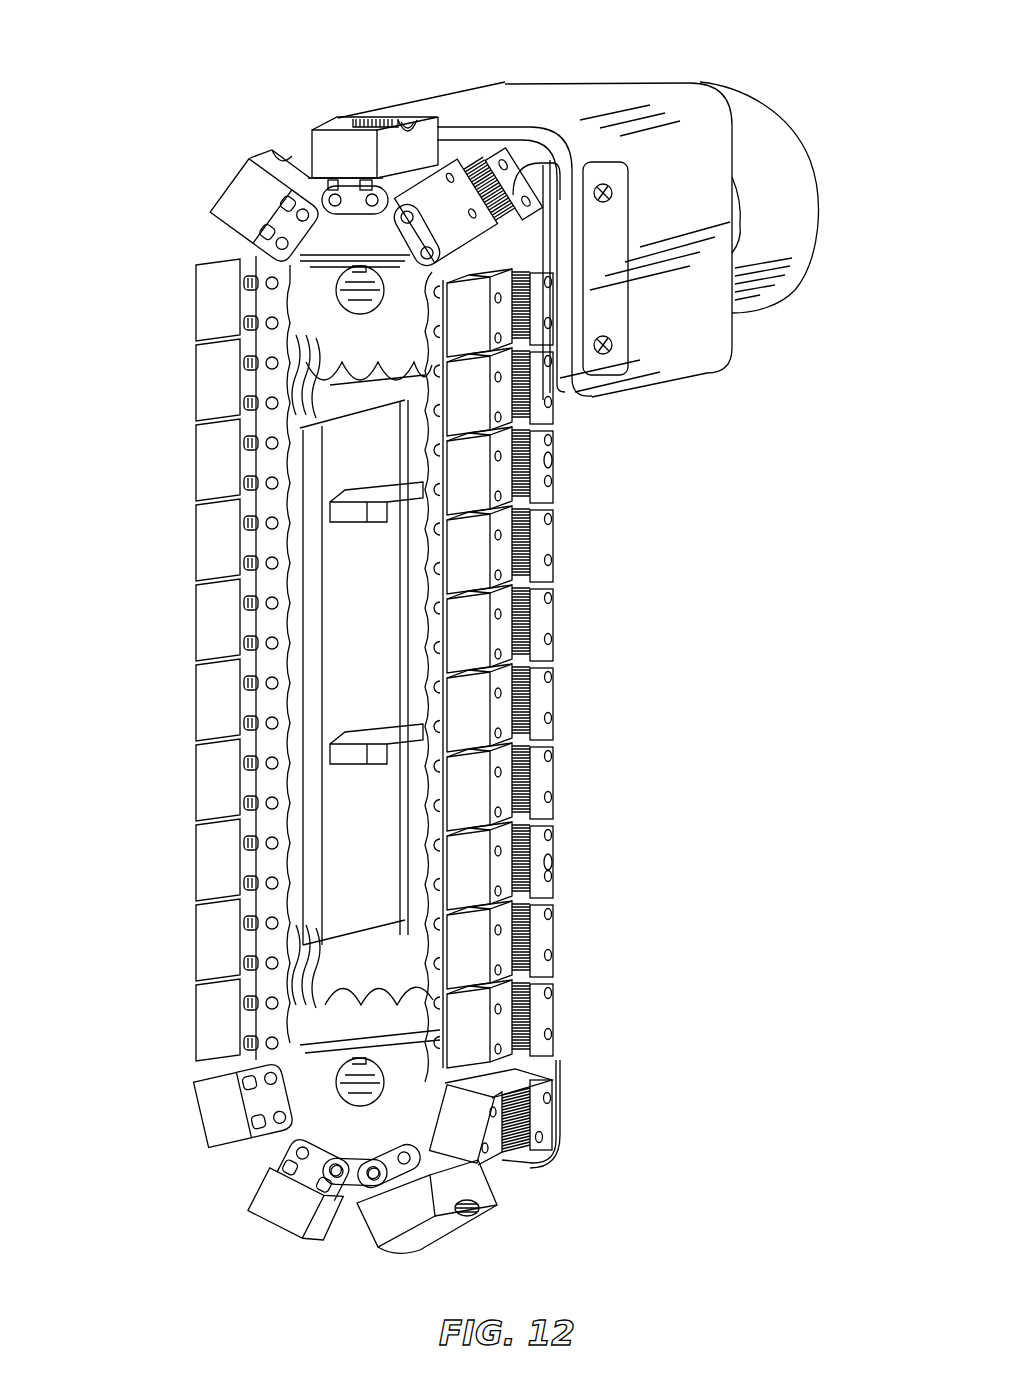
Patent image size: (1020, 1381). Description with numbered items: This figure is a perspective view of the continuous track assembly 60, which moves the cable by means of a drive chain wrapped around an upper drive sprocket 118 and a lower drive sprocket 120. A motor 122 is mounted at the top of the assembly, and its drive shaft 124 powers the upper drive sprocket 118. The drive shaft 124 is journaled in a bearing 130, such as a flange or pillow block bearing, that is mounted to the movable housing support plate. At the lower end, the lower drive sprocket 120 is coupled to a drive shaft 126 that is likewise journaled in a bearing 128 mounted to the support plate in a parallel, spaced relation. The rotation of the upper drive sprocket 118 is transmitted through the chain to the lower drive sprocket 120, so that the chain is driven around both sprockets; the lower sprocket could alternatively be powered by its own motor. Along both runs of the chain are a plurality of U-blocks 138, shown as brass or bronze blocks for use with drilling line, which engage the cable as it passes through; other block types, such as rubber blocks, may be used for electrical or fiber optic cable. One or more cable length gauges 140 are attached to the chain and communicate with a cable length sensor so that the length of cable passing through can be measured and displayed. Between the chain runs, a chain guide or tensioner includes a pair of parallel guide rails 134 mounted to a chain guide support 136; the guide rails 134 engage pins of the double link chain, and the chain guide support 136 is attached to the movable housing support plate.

The track assembly 60 is at (632, 1170).
The upper drive sprocket 118 is at (332, 250).
The lower drive sprocket 120 is at (357, 1130).
The motor 122 is at (795, 158).
The drive shaft 124 is at (338, 293).
The drive shaft 126 is at (355, 1093).
The bearing 128 is at (492, 945).
The bearing 130 is at (525, 165).
The guide rails 134 is at (303, 462).
The chain guide support 136 is at (345, 548).
The U-blocks 138 is at (205, 795).
The cable length gauges 140 is at (553, 460).